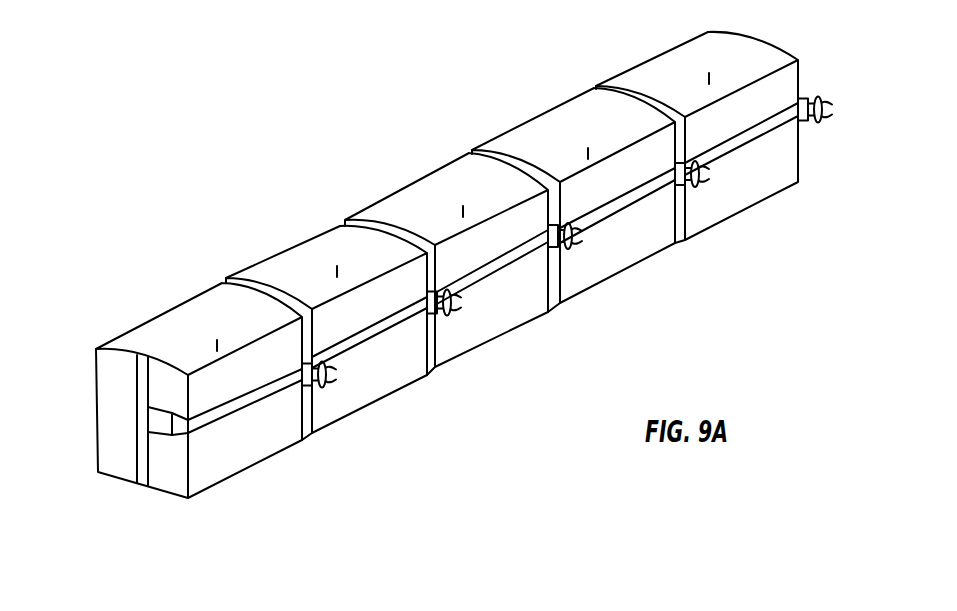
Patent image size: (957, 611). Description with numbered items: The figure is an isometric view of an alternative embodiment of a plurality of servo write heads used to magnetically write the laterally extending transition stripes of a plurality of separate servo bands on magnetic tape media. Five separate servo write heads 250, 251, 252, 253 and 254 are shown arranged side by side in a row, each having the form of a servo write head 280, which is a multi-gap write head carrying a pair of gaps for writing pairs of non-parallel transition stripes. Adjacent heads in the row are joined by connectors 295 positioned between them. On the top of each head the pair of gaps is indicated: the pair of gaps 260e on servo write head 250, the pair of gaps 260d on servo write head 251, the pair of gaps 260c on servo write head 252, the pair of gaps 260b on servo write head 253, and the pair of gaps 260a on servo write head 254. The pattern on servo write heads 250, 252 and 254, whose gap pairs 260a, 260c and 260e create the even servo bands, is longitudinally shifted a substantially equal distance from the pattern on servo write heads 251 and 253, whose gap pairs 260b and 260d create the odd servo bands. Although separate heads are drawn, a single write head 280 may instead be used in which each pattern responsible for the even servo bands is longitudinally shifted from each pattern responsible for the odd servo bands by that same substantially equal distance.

The servo write head 250 is at (117, 319).
The servo write head 251 is at (238, 255).
The servo write head 252 is at (363, 188).
The servo write head 253 is at (486, 125).
The servo write head 254 is at (611, 63).
The servo write head 280 is at (97, 437).
The module connector 295 is at (335, 378).
The pair of gaps 260a is at (704, 73).
The pair of gaps 260b is at (581, 148).
The pair of gaps 260c is at (457, 206).
The pair of gaps 260d is at (326, 262).
The pair of gaps 260e is at (207, 337).